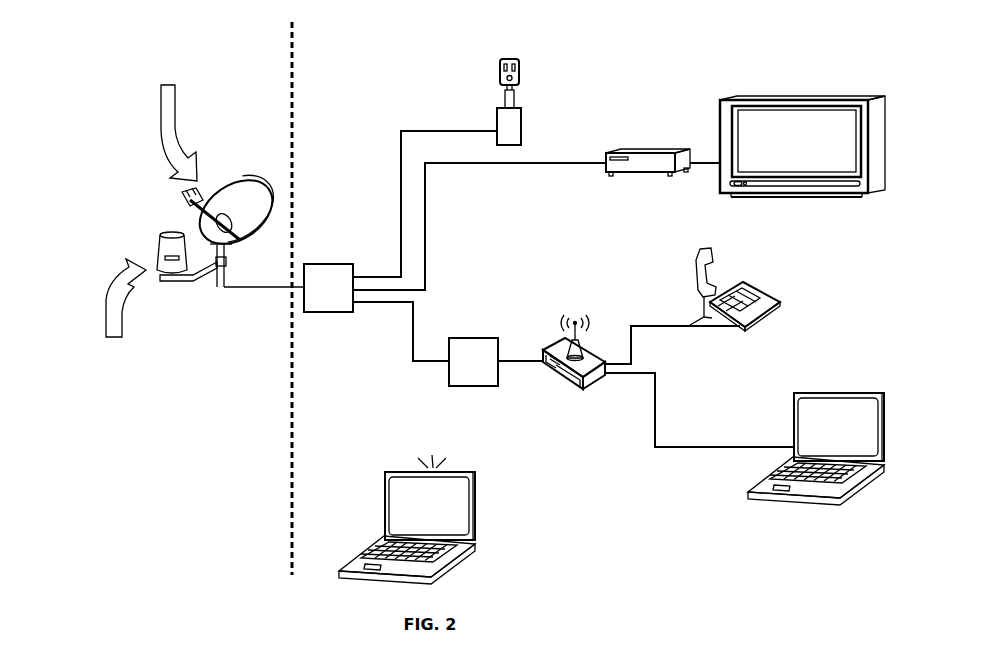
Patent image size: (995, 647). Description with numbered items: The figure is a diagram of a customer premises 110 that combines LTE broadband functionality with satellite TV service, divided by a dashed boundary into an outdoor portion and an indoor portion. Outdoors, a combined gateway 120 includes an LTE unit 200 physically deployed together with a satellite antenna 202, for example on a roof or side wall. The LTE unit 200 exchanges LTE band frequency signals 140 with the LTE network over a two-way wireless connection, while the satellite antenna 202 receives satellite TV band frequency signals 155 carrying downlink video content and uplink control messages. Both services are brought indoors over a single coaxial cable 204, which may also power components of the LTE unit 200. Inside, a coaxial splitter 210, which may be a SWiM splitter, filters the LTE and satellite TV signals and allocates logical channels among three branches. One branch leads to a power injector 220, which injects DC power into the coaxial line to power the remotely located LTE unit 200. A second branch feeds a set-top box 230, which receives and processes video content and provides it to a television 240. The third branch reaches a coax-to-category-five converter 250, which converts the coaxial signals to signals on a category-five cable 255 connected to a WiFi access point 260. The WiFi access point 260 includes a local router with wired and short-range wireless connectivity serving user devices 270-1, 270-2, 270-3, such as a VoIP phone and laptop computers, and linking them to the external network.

The customer premises 110 is at (92, 25).
The combined gateway 120 is at (158, 188).
The LTE band frequency signals 140 is at (118, 341).
The satellite TV band frequency signals 155 is at (168, 104).
The LTE unit 200 is at (156, 231).
The satellite antenna 202 is at (247, 193).
The coaxial cable 204 is at (248, 290).
The coaxial splitter 210 is at (340, 262).
The power injector 220 is at (497, 120).
The set-top box 230 is at (626, 152).
The television 240 is at (836, 100).
The coax/Cat 5 converter 250 is at (485, 338).
The Cat 5 cable 255 is at (520, 364).
The WiFi access point 260 is at (590, 392).
The user device 270-1 is at (781, 306).
The user device 270-2 is at (794, 420).
The user device 270-3 is at (470, 553).